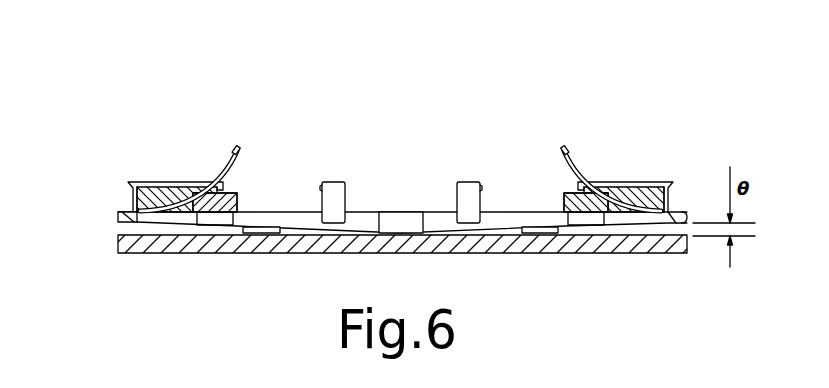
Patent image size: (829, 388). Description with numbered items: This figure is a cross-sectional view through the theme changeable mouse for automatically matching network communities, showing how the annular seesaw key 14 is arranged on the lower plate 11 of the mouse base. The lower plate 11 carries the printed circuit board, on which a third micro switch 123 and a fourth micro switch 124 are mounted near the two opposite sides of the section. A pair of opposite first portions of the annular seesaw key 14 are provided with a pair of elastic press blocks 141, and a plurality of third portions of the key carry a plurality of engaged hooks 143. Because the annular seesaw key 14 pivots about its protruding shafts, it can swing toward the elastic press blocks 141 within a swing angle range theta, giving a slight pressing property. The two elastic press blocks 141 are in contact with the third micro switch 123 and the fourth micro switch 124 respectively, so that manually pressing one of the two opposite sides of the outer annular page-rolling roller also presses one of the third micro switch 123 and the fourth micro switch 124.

The lower plate 11 is at (165, 247).
The annular seesaw key 14 is at (117, 214).
The third micro switch 123 is at (207, 202).
The fourth micro switch 124 is at (593, 207).
The elastic press blocks 141 is at (235, 146).
The engaged hooks 143 is at (332, 190).